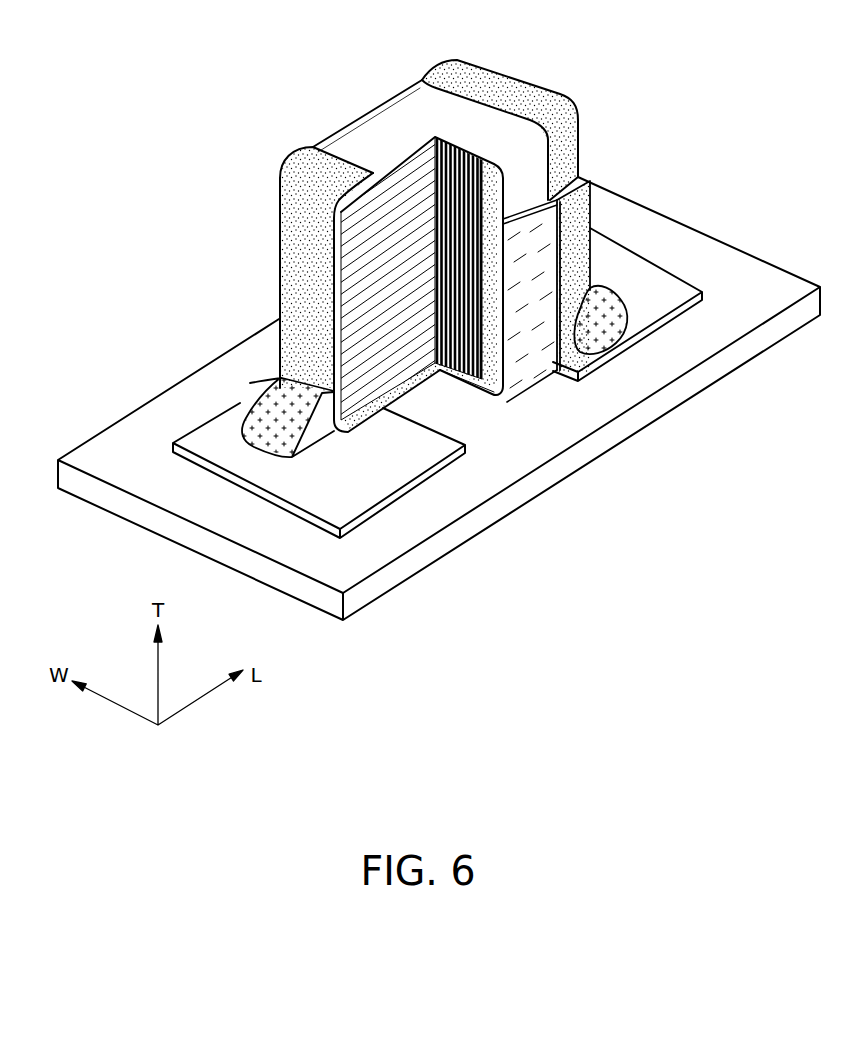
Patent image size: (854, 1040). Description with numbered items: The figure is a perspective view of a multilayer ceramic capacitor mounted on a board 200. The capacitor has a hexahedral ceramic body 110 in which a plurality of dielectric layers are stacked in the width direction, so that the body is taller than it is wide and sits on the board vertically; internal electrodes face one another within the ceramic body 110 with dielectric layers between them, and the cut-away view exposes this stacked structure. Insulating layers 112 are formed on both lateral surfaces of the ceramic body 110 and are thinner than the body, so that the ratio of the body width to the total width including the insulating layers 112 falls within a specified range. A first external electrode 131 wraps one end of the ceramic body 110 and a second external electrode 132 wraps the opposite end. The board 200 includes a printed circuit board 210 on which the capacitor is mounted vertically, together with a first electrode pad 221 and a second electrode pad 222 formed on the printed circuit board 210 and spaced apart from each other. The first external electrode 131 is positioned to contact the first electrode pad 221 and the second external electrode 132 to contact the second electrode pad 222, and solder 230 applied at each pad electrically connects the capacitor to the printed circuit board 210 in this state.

The ceramic body 110 is at (451, 238).
The insulating layer 112 is at (578, 177).
The first external electrode 131 is at (302, 165).
The second external electrode 132 is at (490, 201).
The board 200 is at (439, 398).
The printed circuit board 210 is at (557, 468).
The first electrode pad 221 is at (377, 472).
The second electrode pad 222 is at (650, 291).
The solder 230 is at (273, 407).